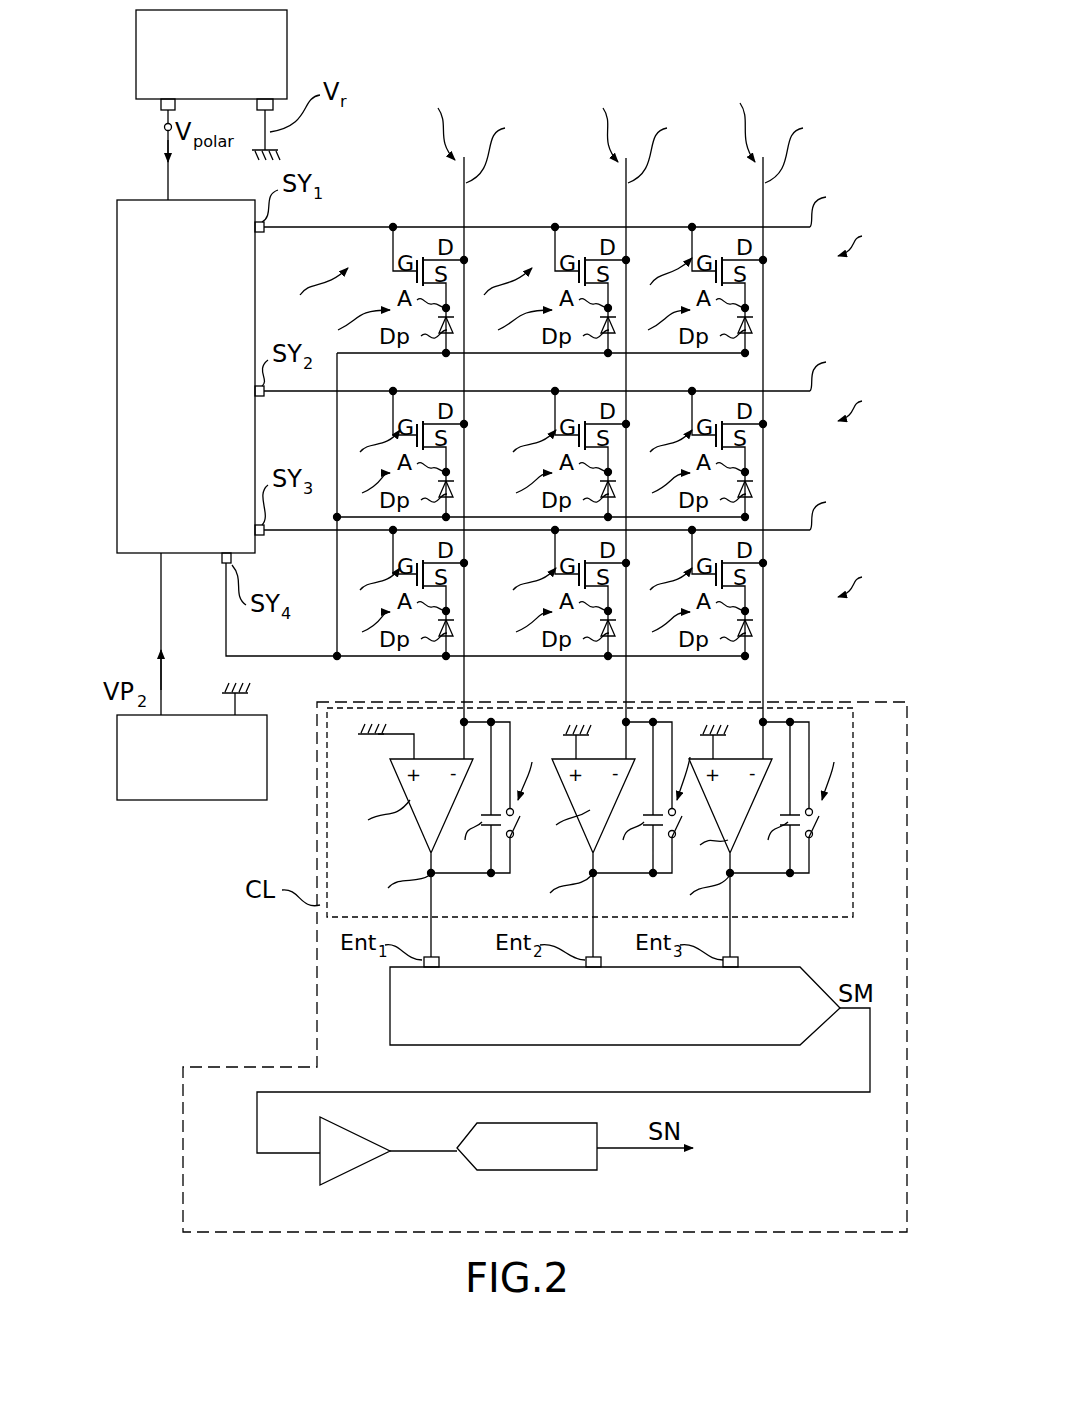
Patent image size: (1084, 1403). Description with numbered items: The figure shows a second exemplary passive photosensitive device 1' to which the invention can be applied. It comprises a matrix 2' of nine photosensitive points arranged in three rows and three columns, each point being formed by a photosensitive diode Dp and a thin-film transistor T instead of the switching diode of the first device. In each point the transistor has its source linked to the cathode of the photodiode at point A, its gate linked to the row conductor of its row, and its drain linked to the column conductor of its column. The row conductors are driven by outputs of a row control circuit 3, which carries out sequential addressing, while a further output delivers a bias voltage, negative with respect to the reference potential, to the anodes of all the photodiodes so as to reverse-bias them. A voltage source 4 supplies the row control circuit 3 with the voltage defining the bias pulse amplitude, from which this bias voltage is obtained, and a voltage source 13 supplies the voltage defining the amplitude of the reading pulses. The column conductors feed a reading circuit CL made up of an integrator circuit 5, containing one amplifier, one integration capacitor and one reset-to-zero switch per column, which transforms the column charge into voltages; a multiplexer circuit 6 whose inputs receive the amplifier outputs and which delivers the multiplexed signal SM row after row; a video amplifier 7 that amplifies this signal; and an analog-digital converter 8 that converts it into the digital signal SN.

The photosensitive device 1' is at (558, 363).
The matrix 2' is at (577, 301).
The row control circuit 3 is at (117, 326).
The voltage source 4 is at (287, 60).
The integrator circuit 5 is at (853, 882).
The multiplexer circuit 6 is at (792, 967).
The video amplifier 7 is at (372, 1158).
The analog-digital converter 8 is at (560, 1172).
The voltage source 13 is at (175, 800).